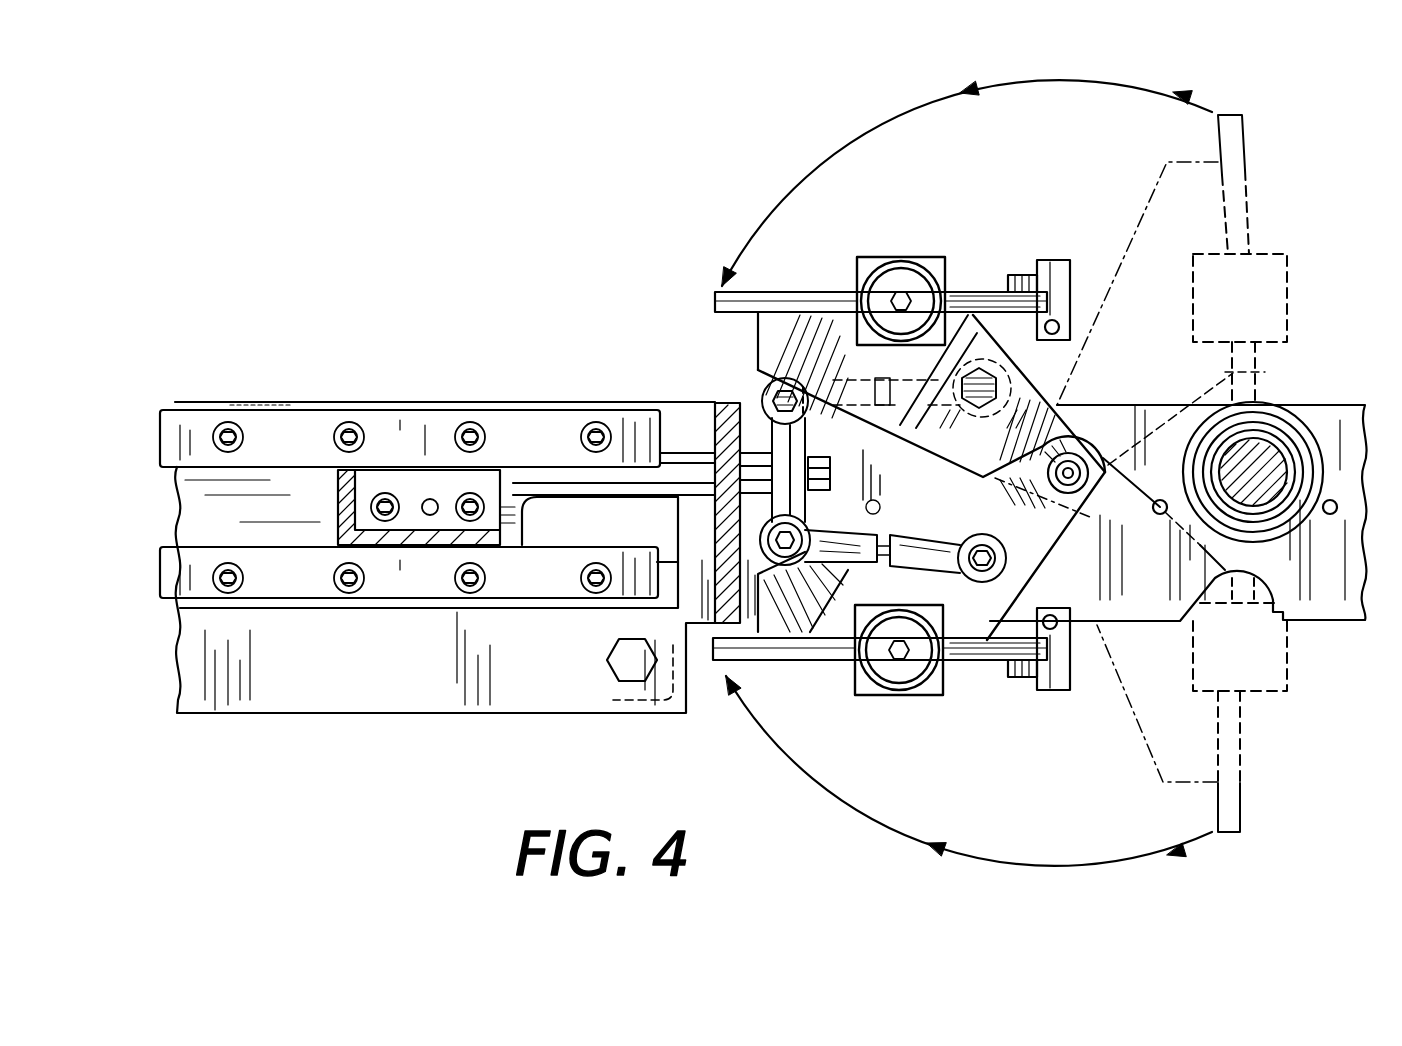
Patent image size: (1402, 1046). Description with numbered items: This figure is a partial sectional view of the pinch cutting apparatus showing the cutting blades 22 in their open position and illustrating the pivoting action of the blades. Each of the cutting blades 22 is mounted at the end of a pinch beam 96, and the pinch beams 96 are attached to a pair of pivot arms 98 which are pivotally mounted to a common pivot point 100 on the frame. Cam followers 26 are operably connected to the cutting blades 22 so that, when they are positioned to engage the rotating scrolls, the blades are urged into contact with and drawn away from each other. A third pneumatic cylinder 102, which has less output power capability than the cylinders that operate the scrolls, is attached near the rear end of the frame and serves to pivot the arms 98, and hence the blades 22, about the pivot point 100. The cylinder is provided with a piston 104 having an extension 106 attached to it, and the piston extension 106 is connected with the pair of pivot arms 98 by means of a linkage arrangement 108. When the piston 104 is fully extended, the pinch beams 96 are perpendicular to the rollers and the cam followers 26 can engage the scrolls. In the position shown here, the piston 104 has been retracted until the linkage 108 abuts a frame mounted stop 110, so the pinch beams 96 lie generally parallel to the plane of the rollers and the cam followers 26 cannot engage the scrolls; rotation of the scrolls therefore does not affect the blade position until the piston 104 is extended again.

The cutting blades 22 is at (1070, 282).
The cam followers 26 is at (905, 280).
The pinch beam 96 is at (963, 290).
The pivot arms 98 is at (832, 345).
The pivot point 100 is at (1097, 460).
The third pneumatic cylinder 102 is at (310, 437).
The piston 104 is at (440, 492).
The piston extension 106 is at (683, 477).
The linkage arrangement 108 is at (848, 565).
The frame mounted stop 110 is at (727, 420).